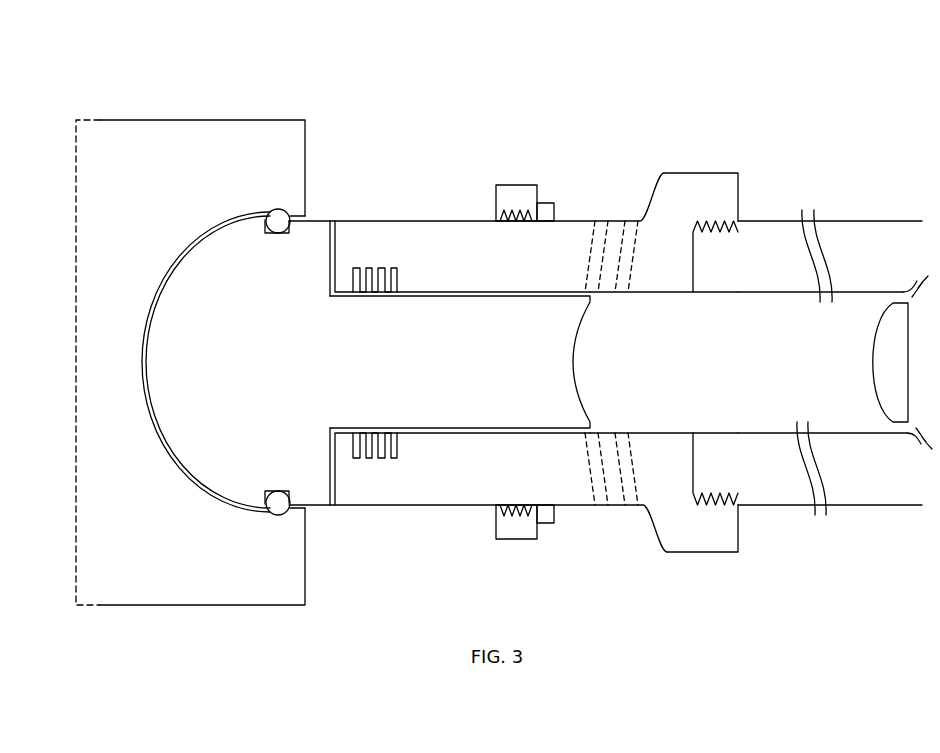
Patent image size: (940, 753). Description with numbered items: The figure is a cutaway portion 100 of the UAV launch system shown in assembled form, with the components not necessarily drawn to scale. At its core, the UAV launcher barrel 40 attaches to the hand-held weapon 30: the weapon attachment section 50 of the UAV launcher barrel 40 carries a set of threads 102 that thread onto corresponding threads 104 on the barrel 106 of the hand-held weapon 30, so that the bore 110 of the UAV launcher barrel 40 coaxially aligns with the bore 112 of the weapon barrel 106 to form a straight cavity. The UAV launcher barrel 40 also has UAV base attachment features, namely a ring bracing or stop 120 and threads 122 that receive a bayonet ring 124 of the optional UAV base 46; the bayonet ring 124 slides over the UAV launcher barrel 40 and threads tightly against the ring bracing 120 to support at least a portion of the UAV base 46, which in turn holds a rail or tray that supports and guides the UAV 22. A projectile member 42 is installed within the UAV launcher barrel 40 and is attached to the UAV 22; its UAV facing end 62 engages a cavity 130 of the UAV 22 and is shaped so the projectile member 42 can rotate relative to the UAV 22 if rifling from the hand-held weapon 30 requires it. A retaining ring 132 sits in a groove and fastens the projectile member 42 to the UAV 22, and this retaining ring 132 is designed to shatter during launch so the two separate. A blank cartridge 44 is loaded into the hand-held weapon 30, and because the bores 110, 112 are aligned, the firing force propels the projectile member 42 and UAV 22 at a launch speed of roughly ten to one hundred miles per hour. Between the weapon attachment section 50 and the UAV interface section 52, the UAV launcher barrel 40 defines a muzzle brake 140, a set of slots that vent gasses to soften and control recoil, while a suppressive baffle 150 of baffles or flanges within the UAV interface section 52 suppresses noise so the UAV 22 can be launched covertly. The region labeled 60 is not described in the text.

The cutaway portion 100 is at (792, 84).
The UAV 22 is at (197, 180).
The hand-held weapon 30 is at (869, 200).
The UAV launcher barrel 40 is at (613, 142).
The projectile member 42 is at (341, 370).
The blank cartridge 44 is at (878, 334).
The UAV base 46 is at (527, 185).
The weapon attachment section 50 is at (734, 173).
The UAV interface section 52 is at (362, 221).
The plunger 60 is at (549, 370).
The UAV facing end 62 is at (164, 370).
The threads 102 is at (711, 214).
The threads 104 is at (721, 239).
The barrel 106 is at (776, 221).
The bore 110 is at (617, 368).
The bore 112 is at (761, 366).
The ring bracing 120 is at (556, 211).
The threads 122 is at (519, 227).
The bayonet ring 124 is at (529, 347).
The cavity 130 is at (160, 257).
The retaining ring 132 is at (270, 211).
The muzzle brake 140 is at (622, 208).
The suppressive baffle 150 is at (384, 263).